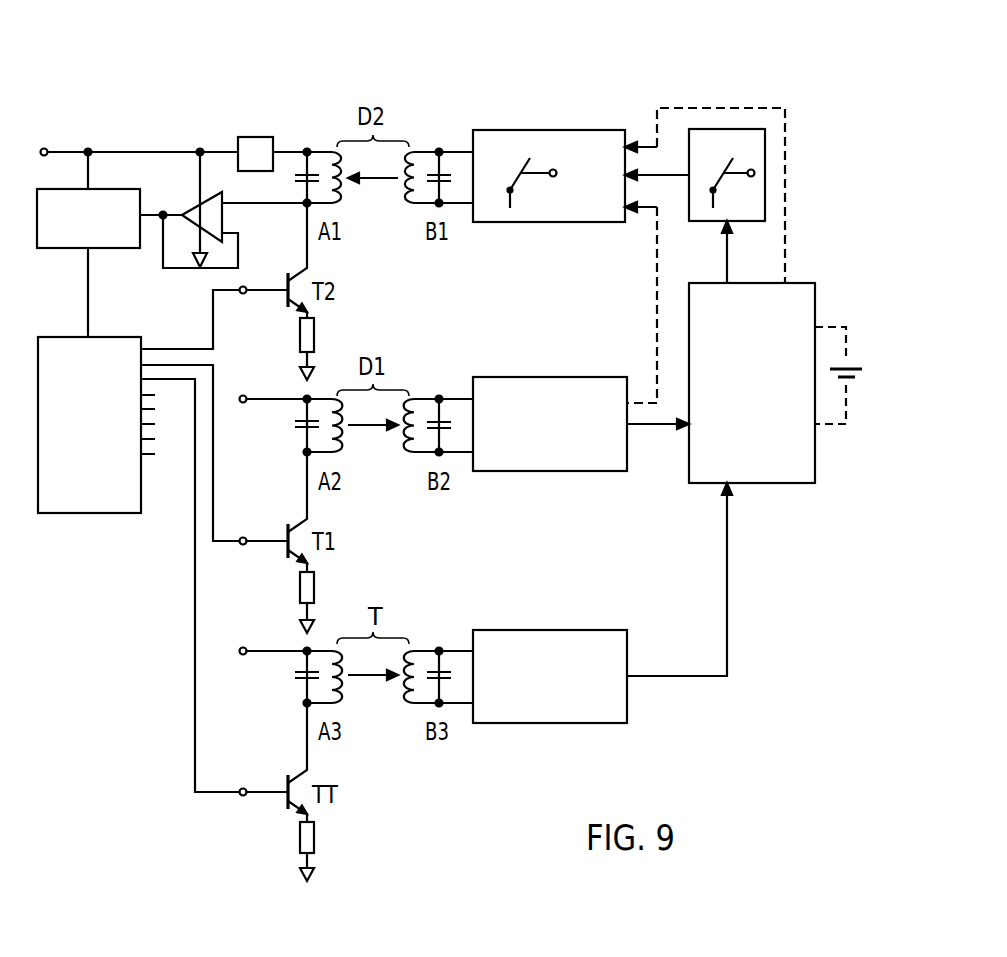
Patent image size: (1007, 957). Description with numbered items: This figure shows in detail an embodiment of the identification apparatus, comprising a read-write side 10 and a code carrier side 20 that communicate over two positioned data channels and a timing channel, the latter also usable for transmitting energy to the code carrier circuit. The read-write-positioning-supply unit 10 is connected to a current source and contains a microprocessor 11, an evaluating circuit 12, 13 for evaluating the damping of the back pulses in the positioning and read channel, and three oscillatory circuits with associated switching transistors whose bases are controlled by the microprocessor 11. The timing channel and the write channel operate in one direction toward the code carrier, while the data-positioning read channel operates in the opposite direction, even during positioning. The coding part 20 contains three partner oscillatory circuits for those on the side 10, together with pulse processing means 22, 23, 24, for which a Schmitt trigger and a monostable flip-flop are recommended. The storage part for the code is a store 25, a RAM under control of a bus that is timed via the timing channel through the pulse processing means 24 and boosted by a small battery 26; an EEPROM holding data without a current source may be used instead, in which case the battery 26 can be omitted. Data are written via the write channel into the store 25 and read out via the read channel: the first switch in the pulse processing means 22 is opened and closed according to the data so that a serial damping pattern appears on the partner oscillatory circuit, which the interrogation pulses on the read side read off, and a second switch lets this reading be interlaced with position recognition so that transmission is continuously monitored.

The read-write side 10 is at (205, 100).
The microprocessor 11 is at (58, 514).
The evaluating circuit 12 is at (58, 249).
The evaluating circuit 13 is at (198, 212).
The code carrier side 20 is at (553, 100).
The pulse processing means 22 is at (594, 223).
The pulse processing means 23 is at (594, 472).
The pulse processing means 24 is at (594, 724).
The store 25 is at (782, 484).
The battery 26 is at (857, 326).